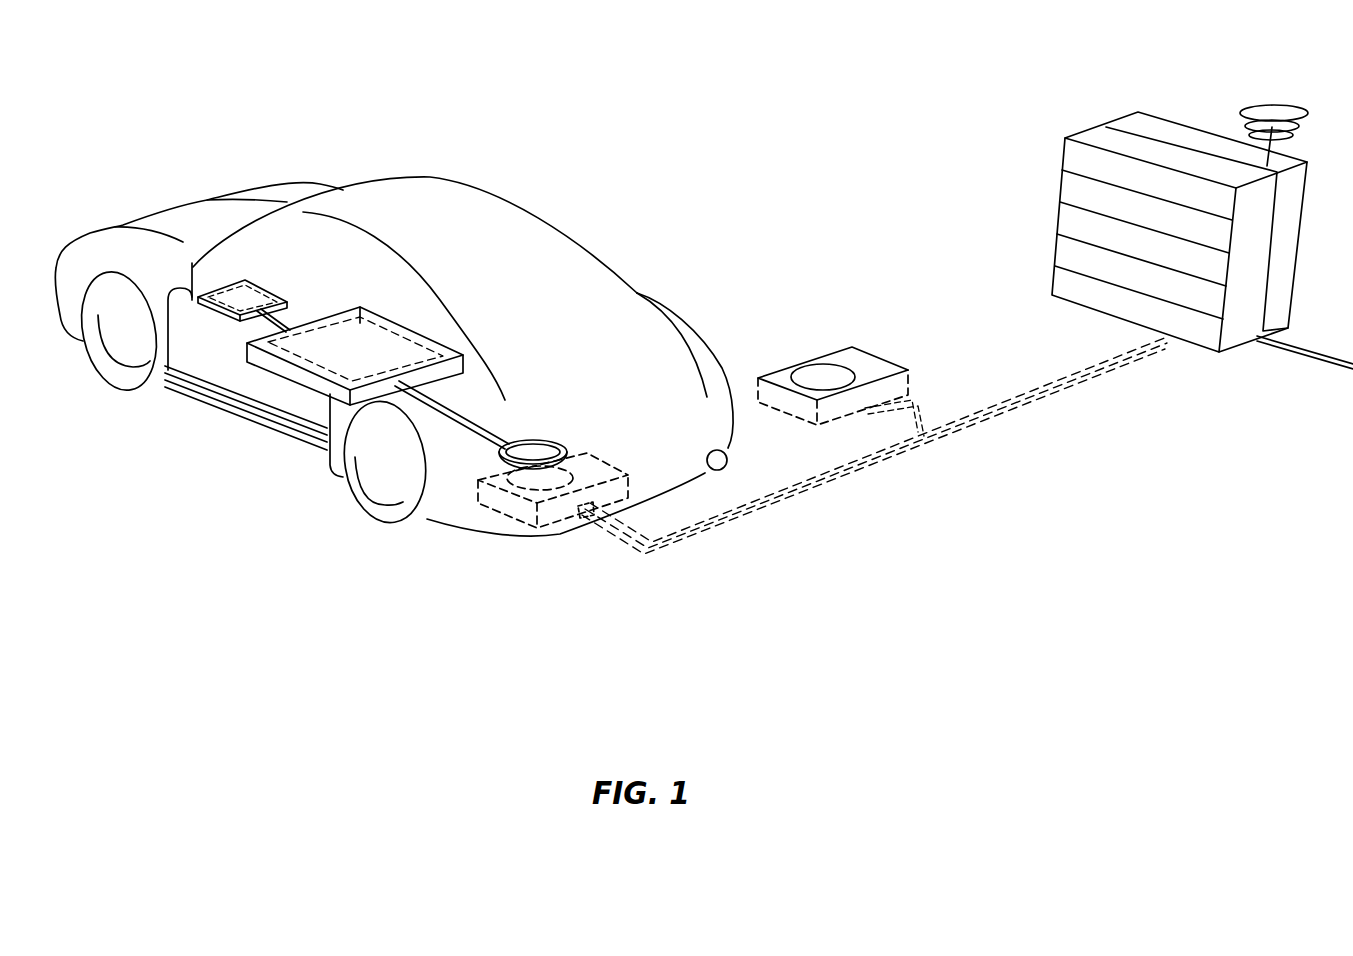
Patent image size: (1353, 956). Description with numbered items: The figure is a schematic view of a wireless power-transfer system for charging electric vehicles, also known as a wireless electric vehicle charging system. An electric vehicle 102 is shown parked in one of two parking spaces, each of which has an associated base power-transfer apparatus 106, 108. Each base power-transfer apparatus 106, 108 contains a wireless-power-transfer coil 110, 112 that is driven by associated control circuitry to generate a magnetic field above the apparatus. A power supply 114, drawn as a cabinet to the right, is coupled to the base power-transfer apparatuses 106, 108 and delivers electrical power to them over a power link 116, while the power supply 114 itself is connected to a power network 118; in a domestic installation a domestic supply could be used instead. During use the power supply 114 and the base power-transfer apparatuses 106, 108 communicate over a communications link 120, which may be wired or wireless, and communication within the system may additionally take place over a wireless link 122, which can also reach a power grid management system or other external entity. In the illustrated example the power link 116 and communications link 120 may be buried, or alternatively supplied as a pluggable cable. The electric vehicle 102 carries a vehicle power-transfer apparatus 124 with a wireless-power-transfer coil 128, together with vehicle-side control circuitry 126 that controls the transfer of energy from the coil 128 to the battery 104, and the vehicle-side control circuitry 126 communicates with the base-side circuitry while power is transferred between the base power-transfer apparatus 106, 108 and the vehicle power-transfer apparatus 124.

The electric vehicle 102 is at (177, 213).
The battery 104 is at (263, 285).
The base power-transfer apparatus 106 is at (500, 483).
The base power-transfer apparatus 108 is at (805, 360).
The wireless-power-transfer coil 110 is at (565, 470).
The wireless-power-transfer coil 112 is at (835, 365).
The power supply 114 is at (1102, 135).
The power link 116 is at (1043, 378).
The power network 118 is at (1317, 360).
The communications link 120 is at (1033, 397).
The wireless link 122 is at (1277, 105).
The vehicle power-transfer apparatus 124 is at (522, 442).
The vehicle-side control circuitry 126 is at (277, 377).
The wireless-power-transfer coil 128 is at (542, 438).